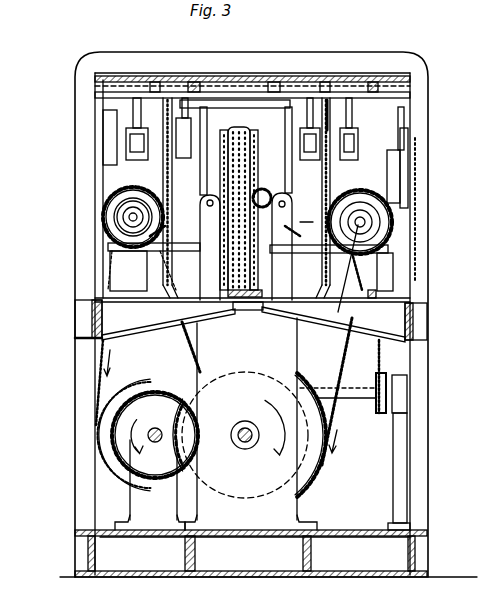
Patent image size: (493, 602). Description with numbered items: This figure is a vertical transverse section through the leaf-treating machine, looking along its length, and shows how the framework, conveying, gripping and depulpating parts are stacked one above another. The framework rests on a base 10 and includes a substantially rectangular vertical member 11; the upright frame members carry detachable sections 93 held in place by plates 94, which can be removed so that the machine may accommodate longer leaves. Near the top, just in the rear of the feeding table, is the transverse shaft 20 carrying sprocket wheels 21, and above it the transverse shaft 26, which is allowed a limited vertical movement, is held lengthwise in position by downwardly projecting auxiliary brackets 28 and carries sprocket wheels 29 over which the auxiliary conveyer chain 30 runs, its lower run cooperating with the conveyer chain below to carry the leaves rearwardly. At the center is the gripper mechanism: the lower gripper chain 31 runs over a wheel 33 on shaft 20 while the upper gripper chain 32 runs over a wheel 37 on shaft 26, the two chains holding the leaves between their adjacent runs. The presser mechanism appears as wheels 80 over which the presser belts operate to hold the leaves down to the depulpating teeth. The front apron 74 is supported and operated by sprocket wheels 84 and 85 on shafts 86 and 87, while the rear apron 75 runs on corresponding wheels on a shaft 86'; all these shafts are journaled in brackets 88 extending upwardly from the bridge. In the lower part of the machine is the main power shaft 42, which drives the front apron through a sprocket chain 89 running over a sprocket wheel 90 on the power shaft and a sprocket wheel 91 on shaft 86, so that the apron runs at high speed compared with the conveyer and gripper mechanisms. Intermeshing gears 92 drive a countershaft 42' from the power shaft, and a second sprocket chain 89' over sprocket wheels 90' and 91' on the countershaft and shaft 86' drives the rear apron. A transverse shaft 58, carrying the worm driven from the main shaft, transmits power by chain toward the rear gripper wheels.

The base 10 is at (378, 558).
The vertical member 11 is at (392, 62).
The transverse shaft 20 is at (125, 248).
The sprocket wheels 21 is at (305, 275).
The transverse shaft 26 is at (120, 167).
The auxiliary brackets 28 is at (268, 118).
The sprocket wheels 29 is at (168, 142).
The auxiliary conveyer chain 30 is at (330, 118).
The gripper chain 31 is at (228, 292).
The gripper chain 32 is at (263, 210).
The wheel 33 is at (217, 290).
The wheel 37 is at (218, 210).
The main power shaft 42 is at (245, 435).
The countershaft 42' is at (150, 479).
The transverse shaft 58 is at (358, 393).
The apron 74 is at (314, 222).
The rear apron 75 is at (108, 198).
The wheels 80 is at (133, 160).
The sprocket wheels 84 is at (382, 222).
The sprocket wheels 85 is at (282, 196).
The shaft 86 is at (348, 275).
The shaft 86' is at (97, 211).
The shaft 87 is at (282, 246).
The brackets 88 is at (204, 218).
The sprocket chain 89 is at (267, 391).
The sprocket chain 89' is at (139, 379).
The sprocket wheel 90 is at (264, 435).
The sprocket wheel 90' is at (94, 435).
The sprocket wheel 91 is at (404, 196).
The sprocket wheel 91' is at (91, 215).
The intermeshing gears 92 is at (127, 418).
The detachable sections 93 is at (417, 200).
The plates 94 is at (414, 253).